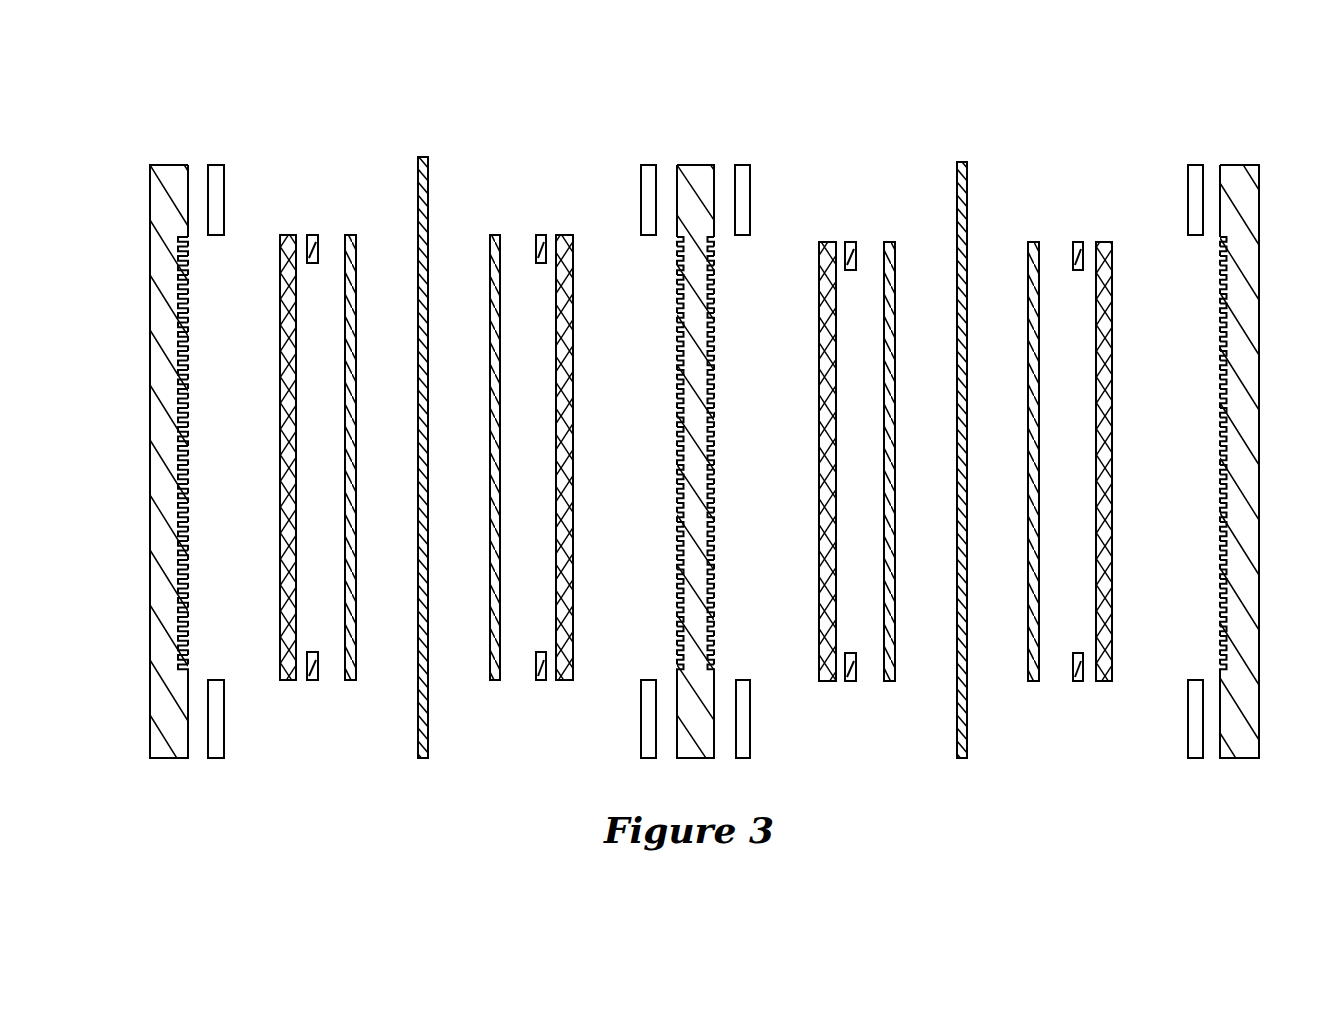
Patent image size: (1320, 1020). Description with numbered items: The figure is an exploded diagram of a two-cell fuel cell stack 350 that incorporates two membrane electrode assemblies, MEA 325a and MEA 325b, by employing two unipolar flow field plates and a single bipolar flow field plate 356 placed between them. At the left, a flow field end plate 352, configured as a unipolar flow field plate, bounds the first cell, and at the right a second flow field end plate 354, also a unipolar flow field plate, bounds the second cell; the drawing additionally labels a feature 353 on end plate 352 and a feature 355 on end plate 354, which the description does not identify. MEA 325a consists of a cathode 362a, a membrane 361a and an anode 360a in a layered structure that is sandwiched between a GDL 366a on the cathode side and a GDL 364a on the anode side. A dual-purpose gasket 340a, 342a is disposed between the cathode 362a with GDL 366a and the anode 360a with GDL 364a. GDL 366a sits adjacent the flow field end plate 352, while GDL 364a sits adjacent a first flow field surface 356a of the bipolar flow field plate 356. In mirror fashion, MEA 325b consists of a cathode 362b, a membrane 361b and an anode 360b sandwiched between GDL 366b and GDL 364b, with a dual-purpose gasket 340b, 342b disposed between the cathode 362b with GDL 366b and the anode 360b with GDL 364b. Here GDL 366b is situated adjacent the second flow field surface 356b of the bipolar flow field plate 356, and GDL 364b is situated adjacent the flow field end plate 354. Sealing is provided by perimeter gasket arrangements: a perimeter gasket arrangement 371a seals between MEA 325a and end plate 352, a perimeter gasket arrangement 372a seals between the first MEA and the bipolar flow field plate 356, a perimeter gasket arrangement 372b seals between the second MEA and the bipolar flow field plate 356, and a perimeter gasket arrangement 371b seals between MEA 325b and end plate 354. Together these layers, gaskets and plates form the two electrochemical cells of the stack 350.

The fuel cell stack 350 is at (311, 86).
The flow field end plate 352 is at (195, 443).
The serrated surface of first end plate 353 is at (184, 297).
The flow field end plate 354 is at (1224, 434).
The serrated surface of second end plate 355 is at (1224, 281).
The bipolar flow field plate 356 is at (702, 440).
The first flow field surface 356a is at (680, 292).
The second flow field surface 356b is at (712, 294).
The MEA 325a is at (427, 472).
The MEA 325b is at (963, 474).
The membrane 361a is at (423, 157).
The membrane 361b is at (962, 162).
The anode 360a is at (495, 235).
The anode 360b is at (1034, 242).
The cathode 362a is at (350, 235).
The cathode 362b is at (889, 242).
The GDL 364a is at (564, 235).
The GDL 364b is at (1103, 242).
The GDL 366a is at (287, 235).
The GDL 366b is at (826, 242).
The dual-purpose gasket 340a is at (312, 235).
The dual-purpose gasket 340b is at (851, 242).
The dual-purpose gasket 342a is at (540, 235).
The dual-purpose gasket 342b is at (1078, 242).
The perimeter gasket arrangement 371a is at (216, 165).
The perimeter gasket arrangement 371b is at (743, 165).
The perimeter gasket arrangement 372a is at (648, 165).
The perimeter gasket arrangement 372b is at (1195, 165).